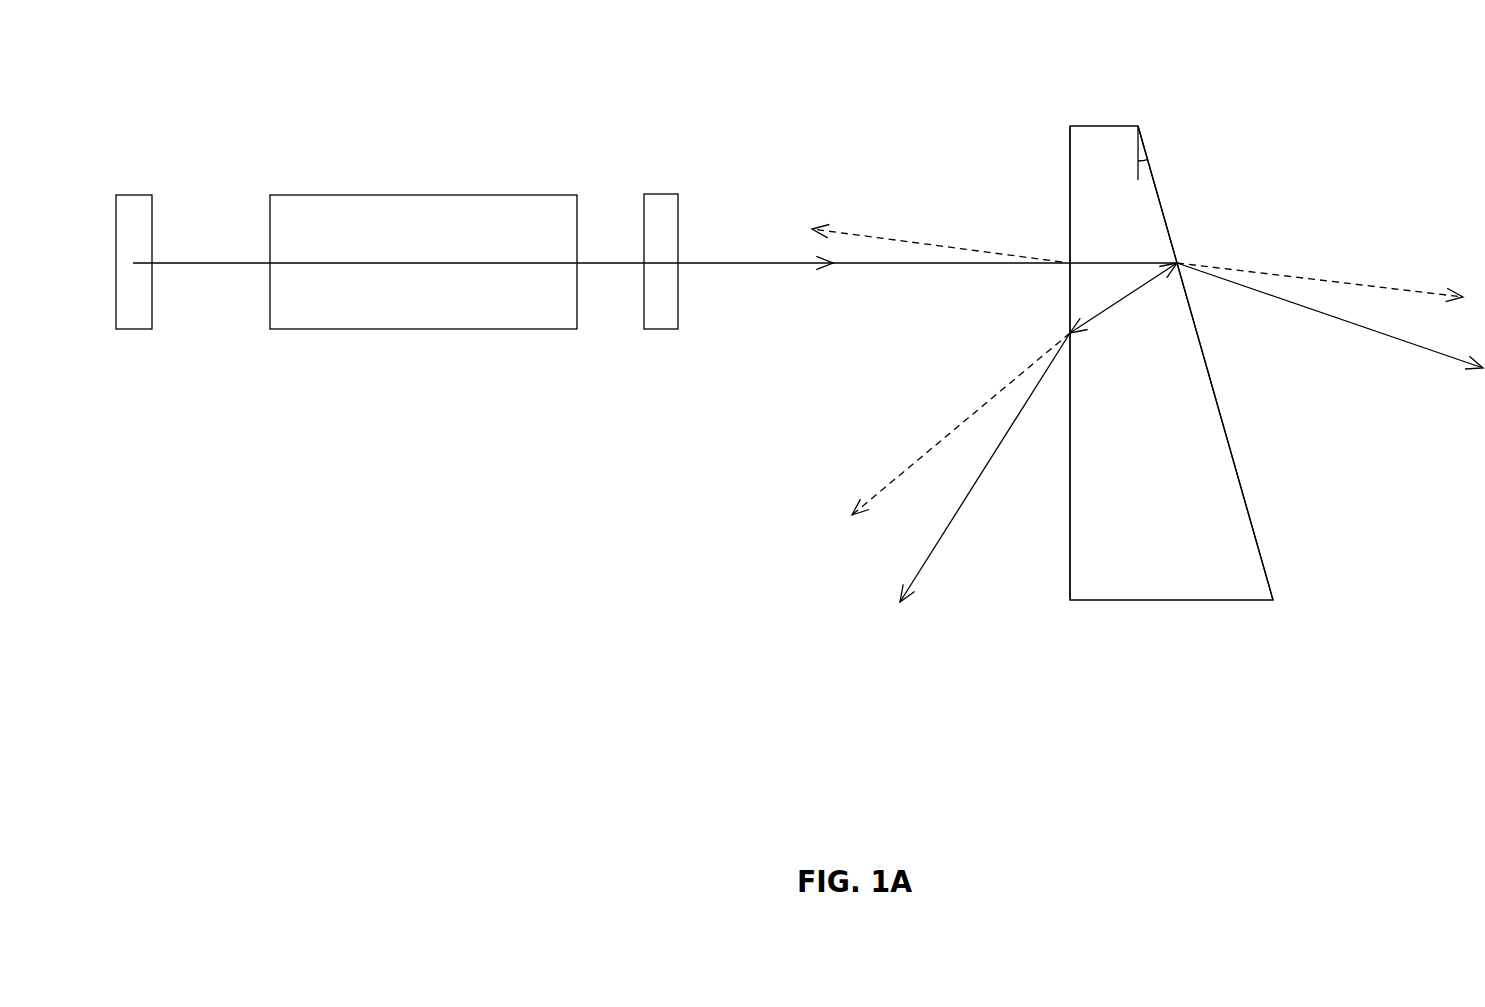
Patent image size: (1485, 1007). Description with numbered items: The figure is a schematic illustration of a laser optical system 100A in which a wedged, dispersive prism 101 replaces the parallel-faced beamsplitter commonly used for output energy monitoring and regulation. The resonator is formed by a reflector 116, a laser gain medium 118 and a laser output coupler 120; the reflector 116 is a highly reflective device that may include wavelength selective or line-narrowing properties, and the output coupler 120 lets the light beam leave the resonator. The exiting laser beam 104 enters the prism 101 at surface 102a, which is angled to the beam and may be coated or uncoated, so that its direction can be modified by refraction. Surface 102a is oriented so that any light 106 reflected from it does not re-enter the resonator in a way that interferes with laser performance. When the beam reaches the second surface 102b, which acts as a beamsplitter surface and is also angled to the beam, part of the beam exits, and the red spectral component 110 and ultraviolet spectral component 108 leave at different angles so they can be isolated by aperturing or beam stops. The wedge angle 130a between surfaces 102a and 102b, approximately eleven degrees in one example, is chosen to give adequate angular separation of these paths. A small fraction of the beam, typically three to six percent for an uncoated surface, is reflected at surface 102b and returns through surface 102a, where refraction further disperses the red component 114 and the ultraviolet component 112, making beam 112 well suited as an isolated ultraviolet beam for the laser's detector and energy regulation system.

The laser resonator system 100A is at (289, 76).
The wedged dispersive prism 101 is at (1171, 363).
The first surface 102a is at (1023, 339).
The second surface 102b is at (1205, 363).
The laser beam 104 is at (655, 234).
The reflected light 106 is at (937, 228).
The ultraviolet spectral component 108 is at (1330, 328).
The red spectral component 110 is at (1320, 260).
The ultraviolet component of reflected beam 112 is at (985, 467).
The red component of reflected beam 114 is at (961, 424).
The reflector 116 is at (157, 287).
The laser gain medium 118 is at (423, 230).
The laser output coupler 120 is at (626, 229).
The wedge angle 130a is at (1177, 141).